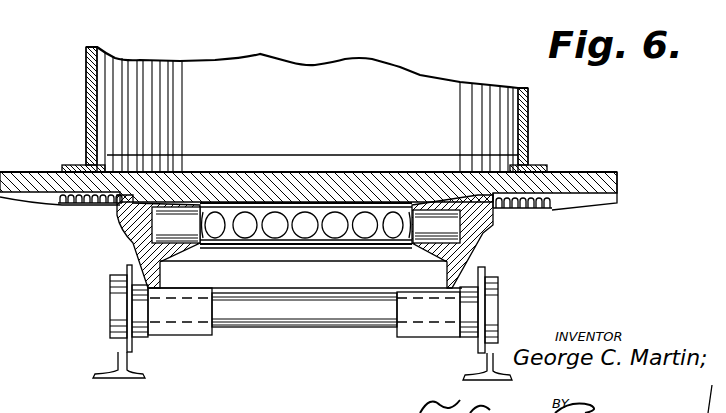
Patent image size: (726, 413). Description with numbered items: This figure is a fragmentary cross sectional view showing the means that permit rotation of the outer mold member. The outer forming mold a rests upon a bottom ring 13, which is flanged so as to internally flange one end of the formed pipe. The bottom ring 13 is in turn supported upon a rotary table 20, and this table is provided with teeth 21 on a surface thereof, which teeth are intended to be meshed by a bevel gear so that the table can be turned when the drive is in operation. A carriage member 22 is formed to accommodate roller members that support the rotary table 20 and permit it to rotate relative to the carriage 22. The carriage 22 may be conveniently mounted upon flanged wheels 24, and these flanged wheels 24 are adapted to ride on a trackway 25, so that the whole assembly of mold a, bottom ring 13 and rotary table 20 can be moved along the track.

The outer forming mold a is at (528, 118).
The bottom ring 13 is at (548, 172).
The teeth 21 is at (533, 210).
The rotary table 20 is at (160, 273).
The carriage member 22 is at (407, 243).
The flanged wheels 24 is at (530, 278).
The trackway 25 is at (485, 358).